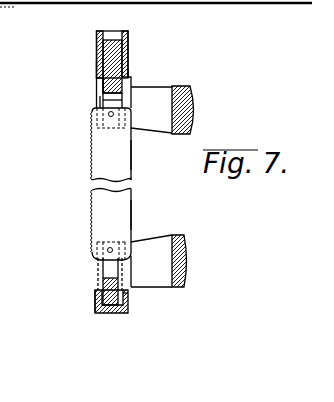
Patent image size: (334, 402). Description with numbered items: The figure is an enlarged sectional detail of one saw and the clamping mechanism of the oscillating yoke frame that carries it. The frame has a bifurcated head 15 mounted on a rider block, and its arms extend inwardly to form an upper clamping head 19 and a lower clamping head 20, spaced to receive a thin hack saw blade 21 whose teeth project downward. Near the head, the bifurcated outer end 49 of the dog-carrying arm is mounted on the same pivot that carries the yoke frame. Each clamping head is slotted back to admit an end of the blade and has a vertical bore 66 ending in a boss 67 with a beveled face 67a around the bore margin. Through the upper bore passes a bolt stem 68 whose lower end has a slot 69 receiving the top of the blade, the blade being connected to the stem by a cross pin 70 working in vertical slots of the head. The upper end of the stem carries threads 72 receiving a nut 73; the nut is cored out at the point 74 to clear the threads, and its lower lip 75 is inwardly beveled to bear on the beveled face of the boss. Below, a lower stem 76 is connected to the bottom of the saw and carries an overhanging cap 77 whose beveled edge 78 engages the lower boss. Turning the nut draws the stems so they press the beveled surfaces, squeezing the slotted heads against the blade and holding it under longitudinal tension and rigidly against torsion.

The bifurcated head 15 is at (193, 0).
The outer end of arm 49 is at (155, 0).
The upper clamping head 19 is at (195, 97).
The lower clamping head 20 is at (181, 258).
The hack saw blade 21 is at (122, 200).
The cross pin 70 is at (107, 130).
The threads 72 is at (100, 55).
The nut 73 is at (128, 53).
The cored-out point 74 is at (100, 62).
The lower lip 75 is at (98, 67).
The vertical bore 66 is at (100, 100).
The boss 67 is at (133, 80).
The beveled face 67a is at (128, 75).
The bolt stem 68 is at (103, 82).
The slot 69 is at (98, 103).
The lower stem 76 is at (102, 279).
The overhanging cap 77 is at (130, 304).
The beveled edge 78 is at (96, 302).